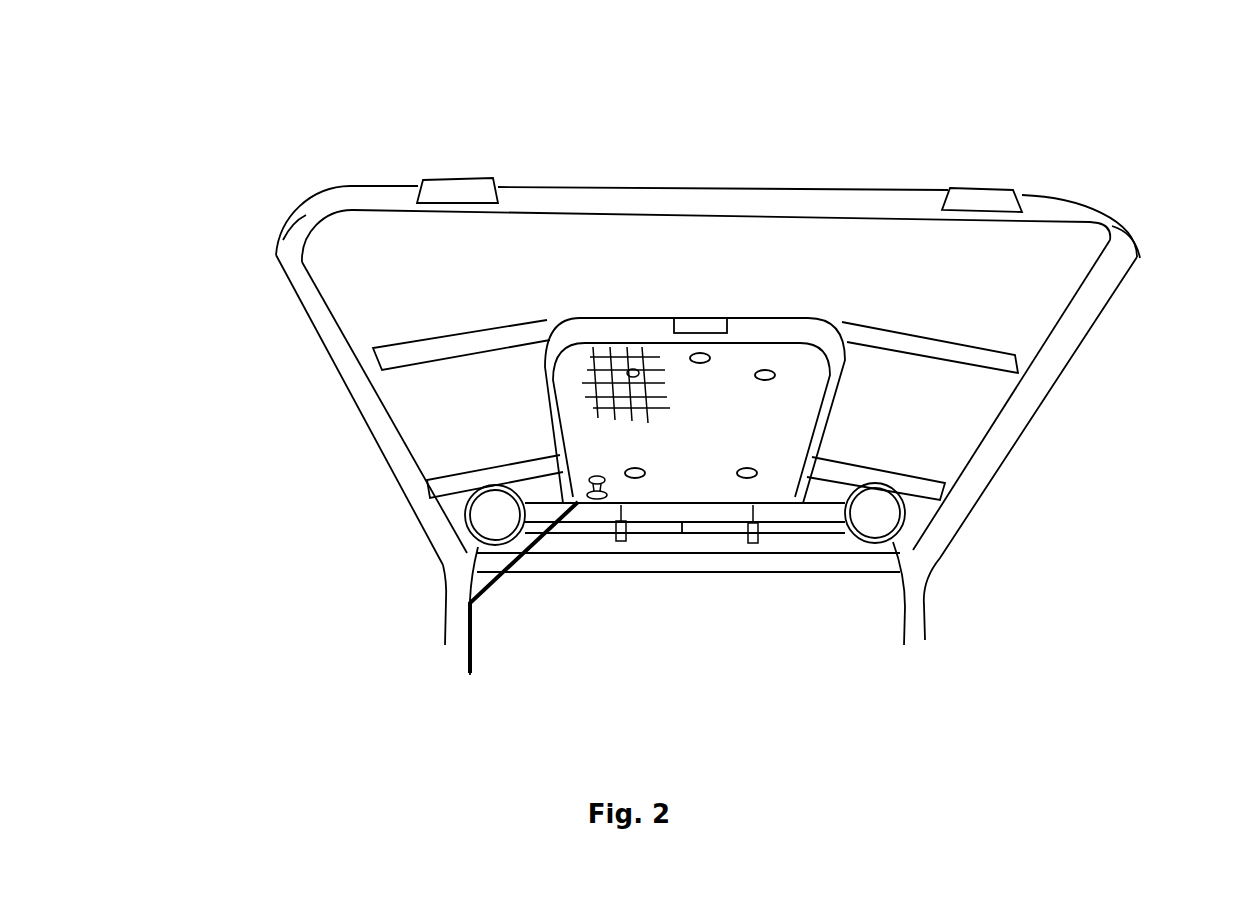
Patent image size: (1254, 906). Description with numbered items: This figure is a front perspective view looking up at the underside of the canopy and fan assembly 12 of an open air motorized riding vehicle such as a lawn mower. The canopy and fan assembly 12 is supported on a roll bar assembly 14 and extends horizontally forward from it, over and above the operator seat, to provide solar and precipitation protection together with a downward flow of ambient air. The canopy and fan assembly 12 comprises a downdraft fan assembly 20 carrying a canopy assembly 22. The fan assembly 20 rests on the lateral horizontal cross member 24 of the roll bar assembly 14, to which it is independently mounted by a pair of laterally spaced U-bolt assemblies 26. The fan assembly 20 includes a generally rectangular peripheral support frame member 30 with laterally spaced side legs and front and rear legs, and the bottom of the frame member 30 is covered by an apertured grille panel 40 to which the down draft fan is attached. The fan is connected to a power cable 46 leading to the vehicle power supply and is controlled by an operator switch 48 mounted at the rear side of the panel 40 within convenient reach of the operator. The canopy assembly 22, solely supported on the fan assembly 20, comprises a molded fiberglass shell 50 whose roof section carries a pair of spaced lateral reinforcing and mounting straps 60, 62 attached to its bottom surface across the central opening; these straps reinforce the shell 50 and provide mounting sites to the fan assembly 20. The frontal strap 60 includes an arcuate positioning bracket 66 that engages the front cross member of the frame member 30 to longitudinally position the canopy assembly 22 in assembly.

The canopy and fan assembly 12 is at (297, 318).
The roll bar assembly 14 is at (447, 623).
The downdraft fan assembly 20 is at (833, 289).
The canopy assembly 22 is at (390, 471).
The lateral horizontal cross member 24 is at (800, 523).
The U-bolt assemblies 26 is at (623, 541).
The peripheral support frame member 30 is at (638, 318).
The apertured grille panel 40 is at (603, 357).
The power cable 46 is at (467, 667).
The operator switch 48 is at (595, 500).
The molded fiberglass shell 50 is at (580, 187).
The frontal reinforcing and mounting strap 60 is at (1002, 357).
The reinforcing and mounting strap 62 is at (942, 490).
The arcuate positioning bracket 66 is at (702, 318).